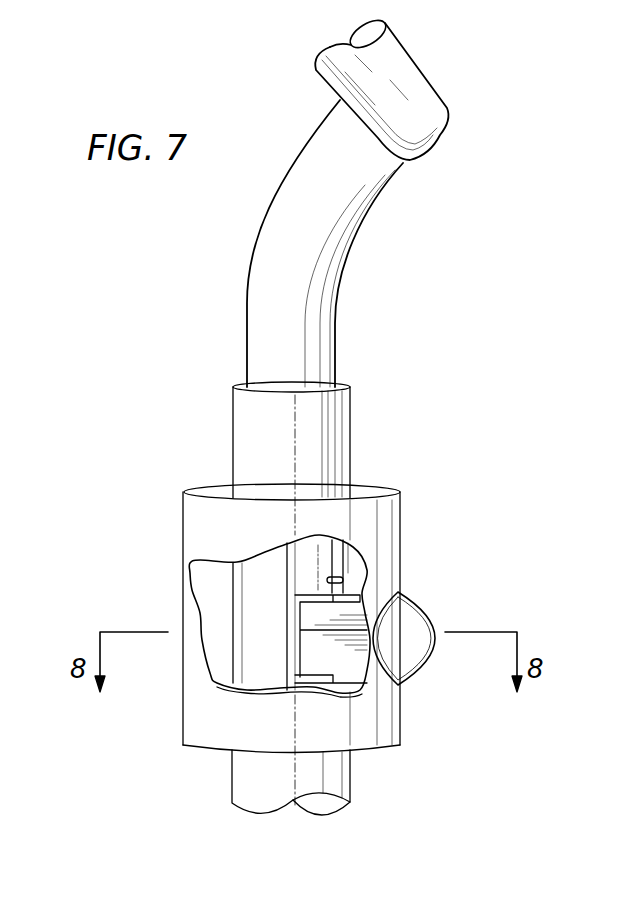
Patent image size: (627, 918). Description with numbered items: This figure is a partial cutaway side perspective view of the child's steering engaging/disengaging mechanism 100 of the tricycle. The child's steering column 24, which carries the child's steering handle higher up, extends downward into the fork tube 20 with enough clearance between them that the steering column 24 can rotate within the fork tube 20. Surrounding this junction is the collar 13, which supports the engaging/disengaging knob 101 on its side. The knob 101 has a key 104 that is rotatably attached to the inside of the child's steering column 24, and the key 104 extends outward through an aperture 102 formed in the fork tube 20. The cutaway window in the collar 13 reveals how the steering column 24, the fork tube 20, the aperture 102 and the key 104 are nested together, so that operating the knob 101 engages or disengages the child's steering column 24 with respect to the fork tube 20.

The child's steering engaging/disengaging mechanism 100 is at (489, 579).
The child's steering column 24 is at (247, 305).
The collar 13 is at (400, 517).
The fork tube 20 is at (243, 587).
The aperture 102 is at (302, 602).
The key 104 is at (327, 677).
The engaging/disengaging knob 101 is at (437, 653).